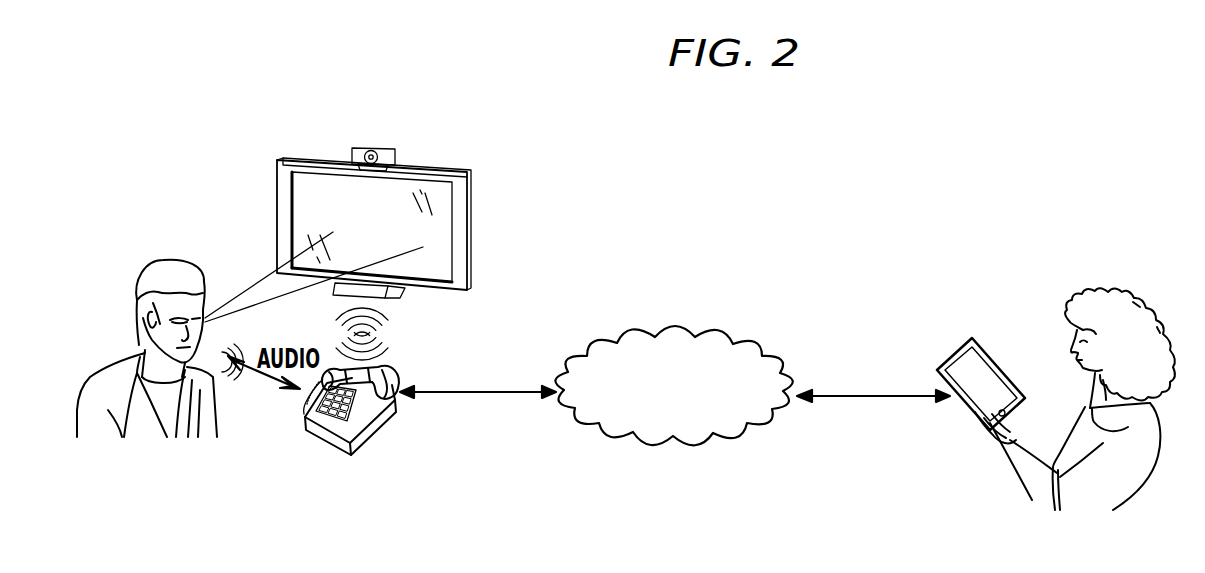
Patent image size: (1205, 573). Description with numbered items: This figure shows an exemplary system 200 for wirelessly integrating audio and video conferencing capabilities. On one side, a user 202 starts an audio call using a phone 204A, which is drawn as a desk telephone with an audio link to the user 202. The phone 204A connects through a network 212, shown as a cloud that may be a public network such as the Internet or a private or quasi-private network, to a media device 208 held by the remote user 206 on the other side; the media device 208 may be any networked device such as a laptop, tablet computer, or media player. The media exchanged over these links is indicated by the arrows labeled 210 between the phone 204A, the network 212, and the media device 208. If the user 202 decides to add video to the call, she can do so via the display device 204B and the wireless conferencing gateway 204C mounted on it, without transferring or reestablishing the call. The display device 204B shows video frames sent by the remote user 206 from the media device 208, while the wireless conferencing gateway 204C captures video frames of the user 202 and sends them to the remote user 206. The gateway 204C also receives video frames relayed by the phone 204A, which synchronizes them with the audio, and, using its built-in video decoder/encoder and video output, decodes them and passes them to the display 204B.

The system 200 is at (707, 232).
The user 202 is at (155, 259).
The phone 204A is at (334, 447).
The display device 204B is at (470, 208).
The wireless conferencing gateway 204C is at (377, 148).
The remote user 206 is at (1118, 291).
The media device 208 is at (972, 341).
The media stream 210 is at (465, 396).
The network 212 is at (678, 334).